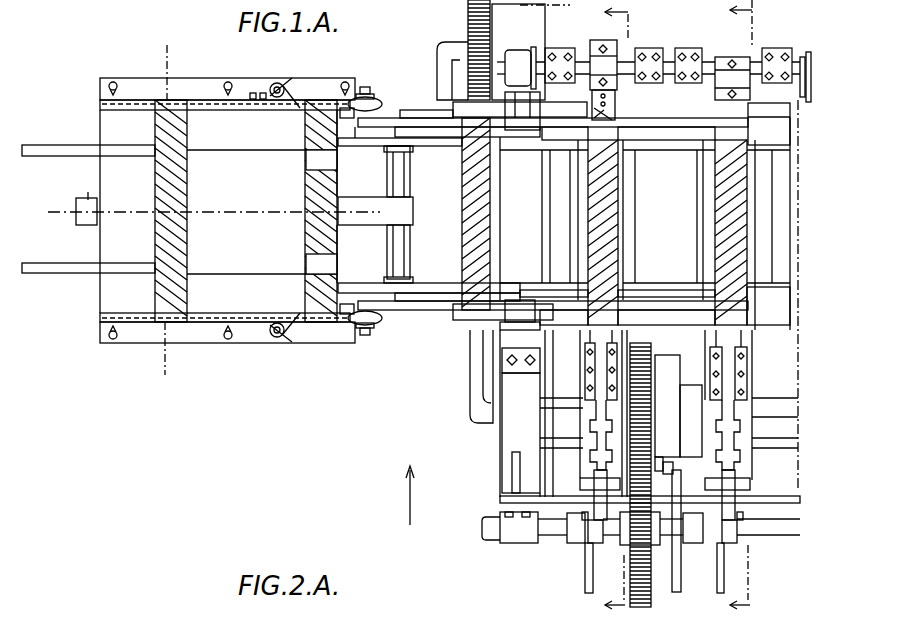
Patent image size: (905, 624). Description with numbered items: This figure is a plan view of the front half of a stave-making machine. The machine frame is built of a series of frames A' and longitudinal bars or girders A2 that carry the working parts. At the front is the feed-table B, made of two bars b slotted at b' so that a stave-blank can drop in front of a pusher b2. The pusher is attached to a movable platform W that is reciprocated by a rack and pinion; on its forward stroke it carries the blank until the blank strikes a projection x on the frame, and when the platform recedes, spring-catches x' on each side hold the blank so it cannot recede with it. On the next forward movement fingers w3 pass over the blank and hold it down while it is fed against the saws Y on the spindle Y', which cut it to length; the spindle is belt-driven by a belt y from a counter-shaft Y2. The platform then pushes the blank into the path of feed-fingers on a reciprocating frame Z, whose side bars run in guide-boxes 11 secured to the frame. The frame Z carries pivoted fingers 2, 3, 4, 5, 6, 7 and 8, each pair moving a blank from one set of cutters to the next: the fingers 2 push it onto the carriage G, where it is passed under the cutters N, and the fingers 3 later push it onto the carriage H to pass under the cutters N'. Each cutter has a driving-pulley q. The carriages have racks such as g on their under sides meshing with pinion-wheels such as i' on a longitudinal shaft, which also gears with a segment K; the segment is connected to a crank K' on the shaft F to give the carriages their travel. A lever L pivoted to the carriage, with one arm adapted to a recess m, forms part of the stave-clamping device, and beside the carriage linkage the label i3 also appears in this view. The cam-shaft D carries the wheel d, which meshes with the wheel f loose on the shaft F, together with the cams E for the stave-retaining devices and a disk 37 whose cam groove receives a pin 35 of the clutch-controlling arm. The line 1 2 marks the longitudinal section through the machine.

The section line 1 2 1 is at (206, 212).
The feed-fingers 2 is at (340, 212).
The feed-fingers 3 is at (166, 63).
The feed-fingers 4 is at (163, 358).
The feed-fingers 5 is at (617, 20).
The feed-fingers 6 is at (615, 589).
The feed-fingers 7 is at (742, 22).
The feed-fingers 8 is at (740, 584).
The guide-boxes 11 is at (520, 211).
The pin 35 is at (673, 470).
The disk 37 is at (684, 531).
The feed-table B is at (227, 220).
The bars of feed-table b is at (209, 193).
The slot b' is at (171, 195).
The pusher b2 is at (179, 202).
The projection x is at (347, 211).
The spring-catches x' is at (289, 210).
The movable platform W is at (289, 211).
The fingers w3 is at (326, 172).
The saws Y is at (389, 214).
The saw-spindle Y' is at (406, 214).
The counter-shaft Y2 is at (86, 221).
The belt y is at (375, 204).
The rack g is at (372, 308).
The segment K is at (463, 50).
The crank K' is at (489, 305).
The reciprocating frame Z is at (520, 211).
The driving-pulley q is at (806, 60).
The cutters N is at (603, 72).
The cutters N' is at (732, 70).
The frames A' is at (544, 218).
The carriage G is at (603, 232).
The carriage H is at (731, 232).
The shaft F is at (561, 415).
The frame bars F' is at (775, 423).
The pinion-wheel i' is at (672, 365).
The link rods i3 is at (596, 434).
The lever L is at (580, 476).
The wheel f is at (640, 468).
The wheel d is at (642, 548).
The longitudinal bars or girders A2 is at (650, 492).
The cam-shaft D is at (641, 527).
The crank M is at (662, 541).
The recess m is at (592, 524).
The cams E is at (580, 574).